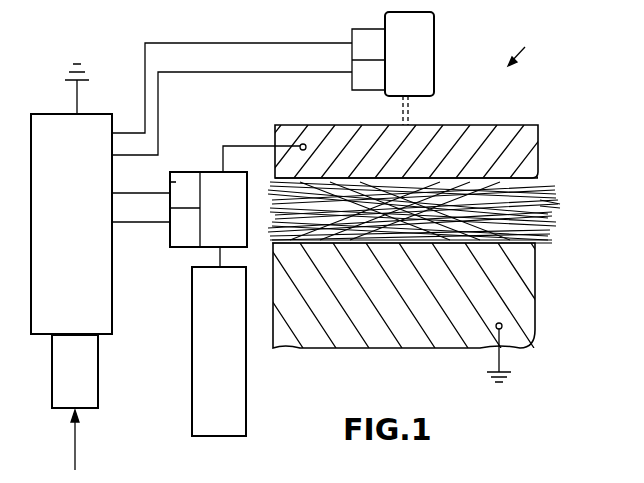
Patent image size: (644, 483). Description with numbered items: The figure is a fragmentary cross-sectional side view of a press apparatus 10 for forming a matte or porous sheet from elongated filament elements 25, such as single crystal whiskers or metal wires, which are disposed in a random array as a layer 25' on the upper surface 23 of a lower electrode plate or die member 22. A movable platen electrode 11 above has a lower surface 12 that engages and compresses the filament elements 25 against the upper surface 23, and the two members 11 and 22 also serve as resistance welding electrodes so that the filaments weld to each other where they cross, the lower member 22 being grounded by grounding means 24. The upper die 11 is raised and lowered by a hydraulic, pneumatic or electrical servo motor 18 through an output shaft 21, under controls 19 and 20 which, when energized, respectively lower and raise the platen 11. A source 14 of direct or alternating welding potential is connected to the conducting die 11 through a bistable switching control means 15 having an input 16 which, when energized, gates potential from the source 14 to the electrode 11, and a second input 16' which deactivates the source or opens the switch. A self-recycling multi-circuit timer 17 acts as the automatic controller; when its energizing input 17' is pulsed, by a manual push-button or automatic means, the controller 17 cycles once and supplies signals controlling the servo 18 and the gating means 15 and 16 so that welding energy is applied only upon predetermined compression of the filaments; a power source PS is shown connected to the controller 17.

The press apparatus 10 is at (529, 48).
The movable platen electrode 11 is at (530, 135).
The lower surface 12 is at (540, 178).
The source of electrical potential 14 is at (197, 299).
The bistable switching control means 15 is at (212, 180).
The input 16 is at (179, 217).
The second input 16' is at (151, 172).
The self-recycling multi-circuit timer 17 is at (87, 224).
The energizing input 17' is at (101, 402).
The servo motor 18 is at (434, 60).
The control 19 is at (356, 37).
The control 20 is at (359, 83).
The output shaft 21 is at (412, 109).
The electrode plate 22 is at (529, 330).
The upper surface 23 is at (536, 245).
The grounding means 24 is at (508, 372).
The elongated filament elements 25 is at (426, 215).
The layer 25' is at (570, 193).
The power source PS is at (89, 82).